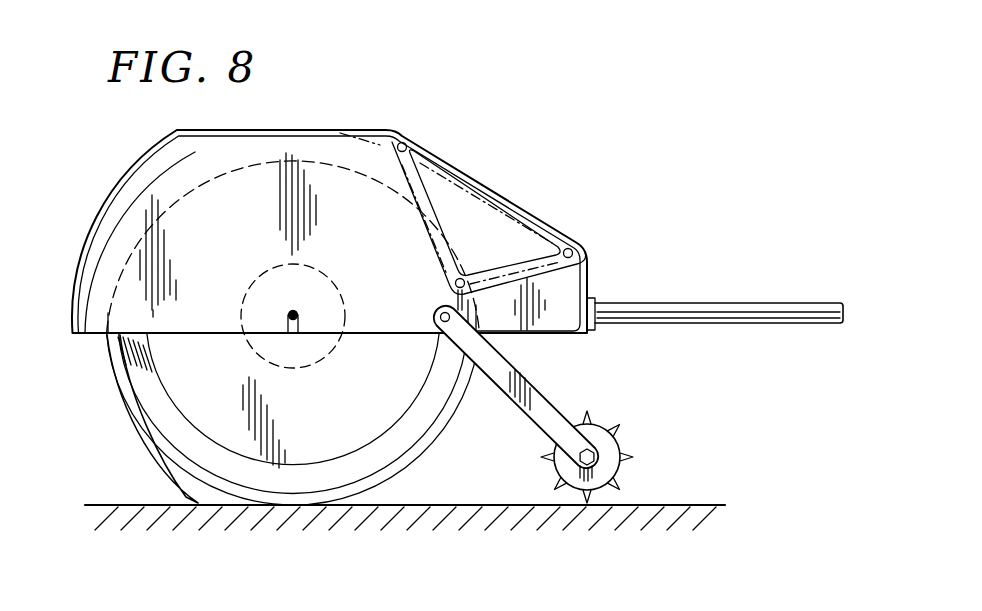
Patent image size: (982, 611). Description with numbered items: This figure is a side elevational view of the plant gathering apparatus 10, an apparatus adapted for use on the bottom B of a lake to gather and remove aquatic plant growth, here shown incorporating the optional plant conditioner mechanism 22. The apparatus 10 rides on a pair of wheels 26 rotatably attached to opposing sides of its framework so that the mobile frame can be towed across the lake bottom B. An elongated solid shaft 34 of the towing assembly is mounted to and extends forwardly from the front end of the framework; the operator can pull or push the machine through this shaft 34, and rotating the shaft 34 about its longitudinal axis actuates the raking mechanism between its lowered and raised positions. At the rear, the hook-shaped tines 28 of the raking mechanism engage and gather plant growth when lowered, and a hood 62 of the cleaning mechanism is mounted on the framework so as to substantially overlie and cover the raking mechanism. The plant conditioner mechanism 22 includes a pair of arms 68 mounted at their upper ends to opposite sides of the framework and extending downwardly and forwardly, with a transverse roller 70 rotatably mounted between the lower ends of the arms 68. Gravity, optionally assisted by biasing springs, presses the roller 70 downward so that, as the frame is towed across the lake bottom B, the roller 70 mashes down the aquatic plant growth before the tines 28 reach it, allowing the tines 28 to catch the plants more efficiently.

The plant gathering apparatus 10 is at (540, 171).
The plant conditioner mechanism 22 is at (571, 404).
The wheels 26 is at (412, 460).
The tines 28 is at (153, 462).
The elongated solid shaft 34 is at (773, 303).
The hood 62 is at (422, 148).
The arms 68 is at (541, 406).
The transverse roller 70 is at (623, 448).
The bottom of a lake B is at (685, 497).